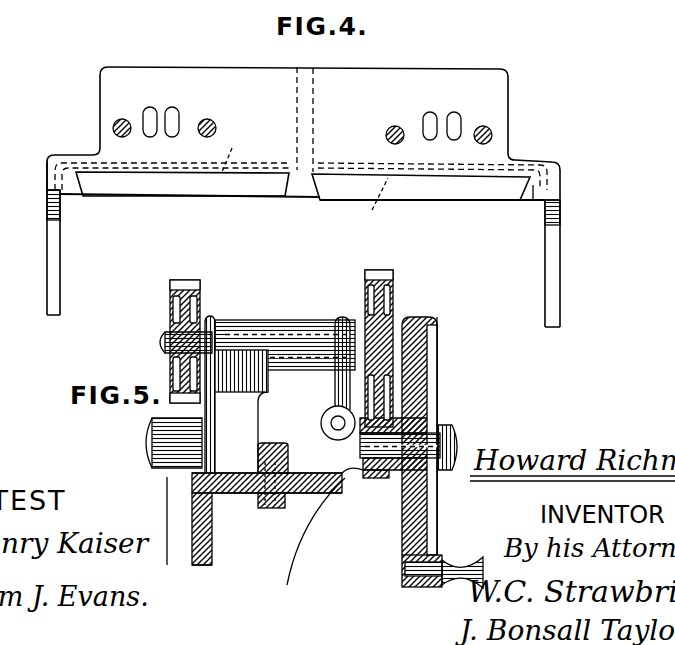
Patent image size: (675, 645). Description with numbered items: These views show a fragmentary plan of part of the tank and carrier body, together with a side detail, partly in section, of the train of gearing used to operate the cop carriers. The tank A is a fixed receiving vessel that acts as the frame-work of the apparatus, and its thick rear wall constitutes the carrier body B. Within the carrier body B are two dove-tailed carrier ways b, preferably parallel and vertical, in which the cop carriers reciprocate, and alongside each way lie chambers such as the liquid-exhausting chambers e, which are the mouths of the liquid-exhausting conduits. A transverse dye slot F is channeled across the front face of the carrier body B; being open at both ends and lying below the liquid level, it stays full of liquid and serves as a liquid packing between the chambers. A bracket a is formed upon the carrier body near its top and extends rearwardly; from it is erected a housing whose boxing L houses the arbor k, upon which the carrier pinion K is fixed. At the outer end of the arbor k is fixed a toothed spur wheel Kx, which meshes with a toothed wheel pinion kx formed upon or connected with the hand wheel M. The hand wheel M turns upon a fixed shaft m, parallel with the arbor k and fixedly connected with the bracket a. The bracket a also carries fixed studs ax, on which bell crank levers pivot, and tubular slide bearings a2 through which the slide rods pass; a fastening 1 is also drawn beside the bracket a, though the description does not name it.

In FIG. 4, the bracket a is at (303, 133).
In FIG. 5, the bracket a is at (283, 412).
In FIG. 4, the liquid-exhausting chamber e is at (305, 176).
In FIG. 4, the carrier way b is at (302, 186).
In FIG. 4, the carrier body B is at (73, 192).
In FIG. 5, the carrier body B is at (193, 524).
In FIG. 4, the tank A is at (547, 248).
In FIG. 4, the dye slot F is at (530, 190).
In FIG. 5, the carrier pinion K is at (203, 307).
In FIG. 5, the arbor k is at (164, 342).
In FIG. 5, the boxing L is at (275, 320).
In FIG. 5, the tubular slide bearing a2 is at (268, 378).
In FIG. 5, the fastening bolt 1 is at (256, 475).
In FIG. 5, the fixed stud ax is at (322, 422).
In FIG. 5, the toothed spur wheel Kx is at (393, 302).
In FIG. 5, the hand wheel M is at (438, 362).
In FIG. 5, the fixed shaft m is at (408, 447).
In FIG. 5, the toothed wheel pinion kx is at (369, 480).